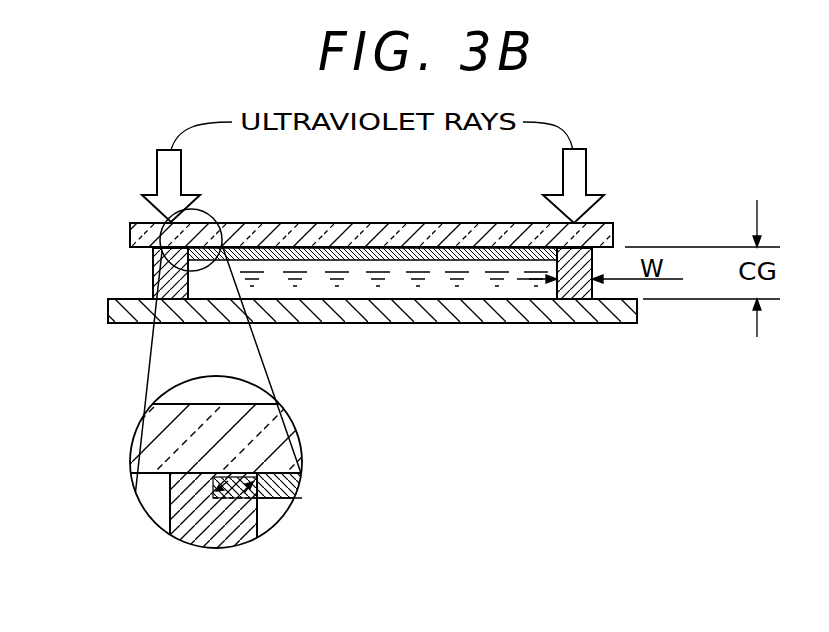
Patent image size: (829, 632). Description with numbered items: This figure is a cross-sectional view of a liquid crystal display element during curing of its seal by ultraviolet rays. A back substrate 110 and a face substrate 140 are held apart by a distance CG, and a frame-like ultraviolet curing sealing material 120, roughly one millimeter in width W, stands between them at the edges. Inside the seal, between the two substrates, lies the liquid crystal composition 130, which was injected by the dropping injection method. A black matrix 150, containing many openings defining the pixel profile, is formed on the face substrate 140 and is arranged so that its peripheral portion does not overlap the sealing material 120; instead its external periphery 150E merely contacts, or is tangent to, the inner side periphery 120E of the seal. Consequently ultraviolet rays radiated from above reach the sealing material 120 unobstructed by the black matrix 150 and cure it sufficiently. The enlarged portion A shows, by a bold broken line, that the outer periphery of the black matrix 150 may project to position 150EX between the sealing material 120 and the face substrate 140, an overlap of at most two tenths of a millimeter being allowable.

The back substrate 110 is at (637, 312).
The frame-like ultraviolet curing sealing material 120 is at (153, 272).
The inner side periphery of the frame-like ultraviolet curing sealing material 120E is at (173, 490).
The liquid crystal composition 130 is at (500, 288).
The face substrate 140 is at (615, 236).
The black matrix 150 is at (285, 247).
The external periphery of the black matrix 150E is at (290, 497).
The projecting position of the black matrix outer periphery 150EX is at (233, 490).